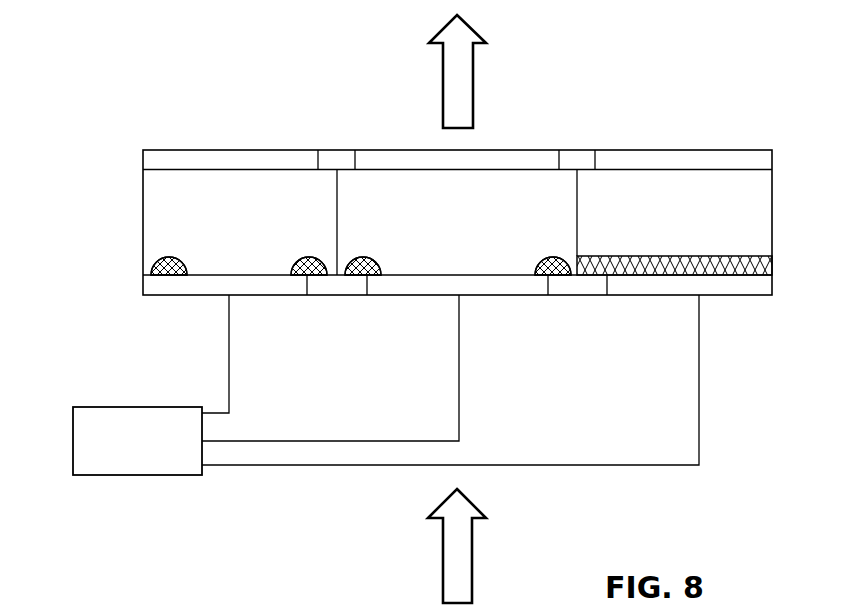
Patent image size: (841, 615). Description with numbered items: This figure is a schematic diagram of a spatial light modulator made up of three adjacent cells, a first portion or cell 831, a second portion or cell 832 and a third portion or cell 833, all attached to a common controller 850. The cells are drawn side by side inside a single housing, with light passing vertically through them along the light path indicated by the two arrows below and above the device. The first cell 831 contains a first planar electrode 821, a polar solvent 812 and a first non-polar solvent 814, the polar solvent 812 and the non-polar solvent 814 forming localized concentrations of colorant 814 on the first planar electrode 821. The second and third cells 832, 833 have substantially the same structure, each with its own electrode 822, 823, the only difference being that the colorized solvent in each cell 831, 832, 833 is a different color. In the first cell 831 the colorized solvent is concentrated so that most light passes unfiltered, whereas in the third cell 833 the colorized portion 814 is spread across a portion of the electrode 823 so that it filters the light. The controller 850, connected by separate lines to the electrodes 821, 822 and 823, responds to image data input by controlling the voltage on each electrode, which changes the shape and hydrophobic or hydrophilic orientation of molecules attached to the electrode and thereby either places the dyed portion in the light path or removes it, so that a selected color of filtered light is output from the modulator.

The polar solvent 812 is at (756, 197).
The first non-polar solvent 814 is at (695, 254).
The first planar electrode 821 is at (185, 297).
The electrode 822 is at (398, 296).
The electrode 823 is at (651, 296).
The first portion or cell 831 is at (158, 196).
The second portion or cell 832 is at (506, 148).
The third portion or cell 833 is at (670, 148).
The controller 850 is at (72, 440).